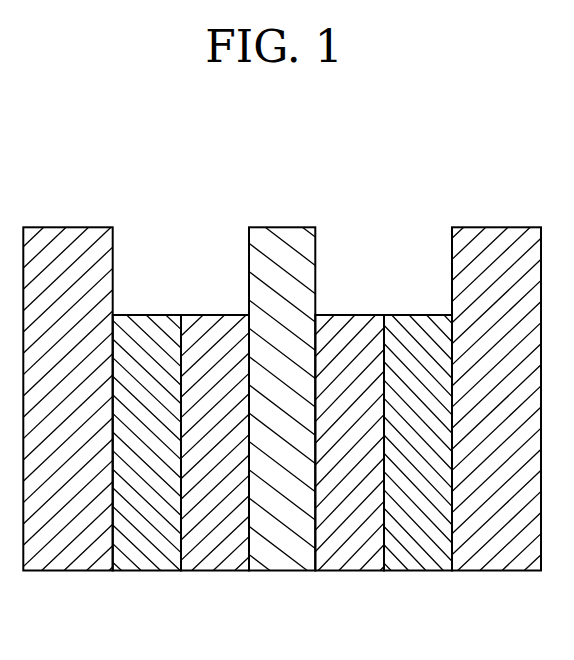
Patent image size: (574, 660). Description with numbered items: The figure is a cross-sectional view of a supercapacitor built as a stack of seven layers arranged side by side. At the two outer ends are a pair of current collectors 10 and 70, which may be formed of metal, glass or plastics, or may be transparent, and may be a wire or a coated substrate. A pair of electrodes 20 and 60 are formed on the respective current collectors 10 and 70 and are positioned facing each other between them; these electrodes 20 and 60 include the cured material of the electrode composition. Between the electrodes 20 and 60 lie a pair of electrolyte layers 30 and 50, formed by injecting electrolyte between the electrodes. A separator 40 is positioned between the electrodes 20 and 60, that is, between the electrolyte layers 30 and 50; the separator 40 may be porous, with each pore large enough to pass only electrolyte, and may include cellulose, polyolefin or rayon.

The current collector 10 is at (67, 426).
The electrode 20 is at (147, 470).
The electrolyte layer 30 is at (215, 470).
The separator 40 is at (282, 426).
The electrolyte layer 50 is at (349, 470).
The electrode 60 is at (418, 470).
The current collector 70 is at (496, 426).